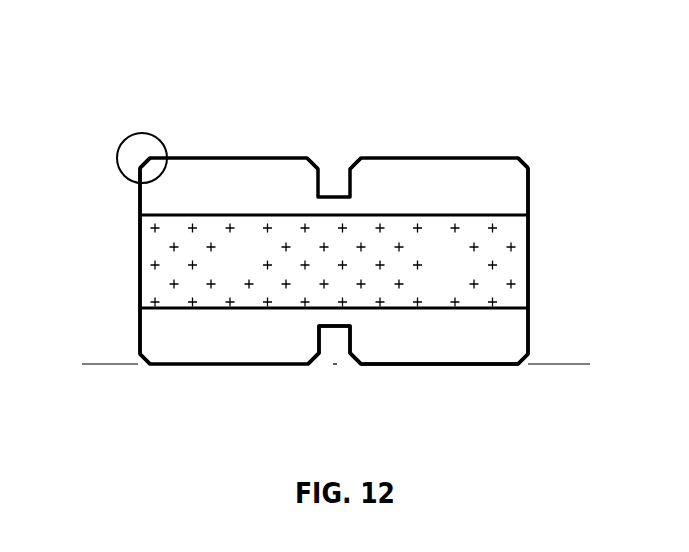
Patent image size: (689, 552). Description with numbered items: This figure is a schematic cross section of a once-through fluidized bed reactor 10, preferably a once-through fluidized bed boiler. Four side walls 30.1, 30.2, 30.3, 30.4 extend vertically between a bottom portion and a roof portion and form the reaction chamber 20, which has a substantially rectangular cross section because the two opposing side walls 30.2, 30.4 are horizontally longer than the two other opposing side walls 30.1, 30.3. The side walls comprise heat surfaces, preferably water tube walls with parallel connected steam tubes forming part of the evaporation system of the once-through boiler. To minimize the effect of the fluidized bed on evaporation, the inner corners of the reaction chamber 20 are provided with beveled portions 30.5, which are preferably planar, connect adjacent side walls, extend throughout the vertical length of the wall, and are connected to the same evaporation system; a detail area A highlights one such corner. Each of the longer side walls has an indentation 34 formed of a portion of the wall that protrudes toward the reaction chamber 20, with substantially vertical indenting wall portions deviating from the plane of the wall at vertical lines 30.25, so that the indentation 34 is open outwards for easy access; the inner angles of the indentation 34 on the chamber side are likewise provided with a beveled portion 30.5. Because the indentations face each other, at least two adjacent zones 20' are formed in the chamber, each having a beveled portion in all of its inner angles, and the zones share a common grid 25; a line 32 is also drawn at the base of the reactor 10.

The once-through fluidized bed reactor 10 is at (267, 105).
The detail area A is at (119, 147).
The reaction chamber 20 is at (334, 202).
The adjacent zones 20' is at (333, 265).
The common grid 25 is at (508, 297).
The side wall 30.1 is at (530, 240).
The side wall 30.2 is at (405, 365).
The side wall 30.3 is at (140, 238).
The side wall 30.4 is at (165, 157).
The beveled portion 30.5 is at (139, 165).
The vertical lines 30.25 is at (362, 162).
The base plane 32 is at (103, 366).
The indentation 34 is at (318, 365).